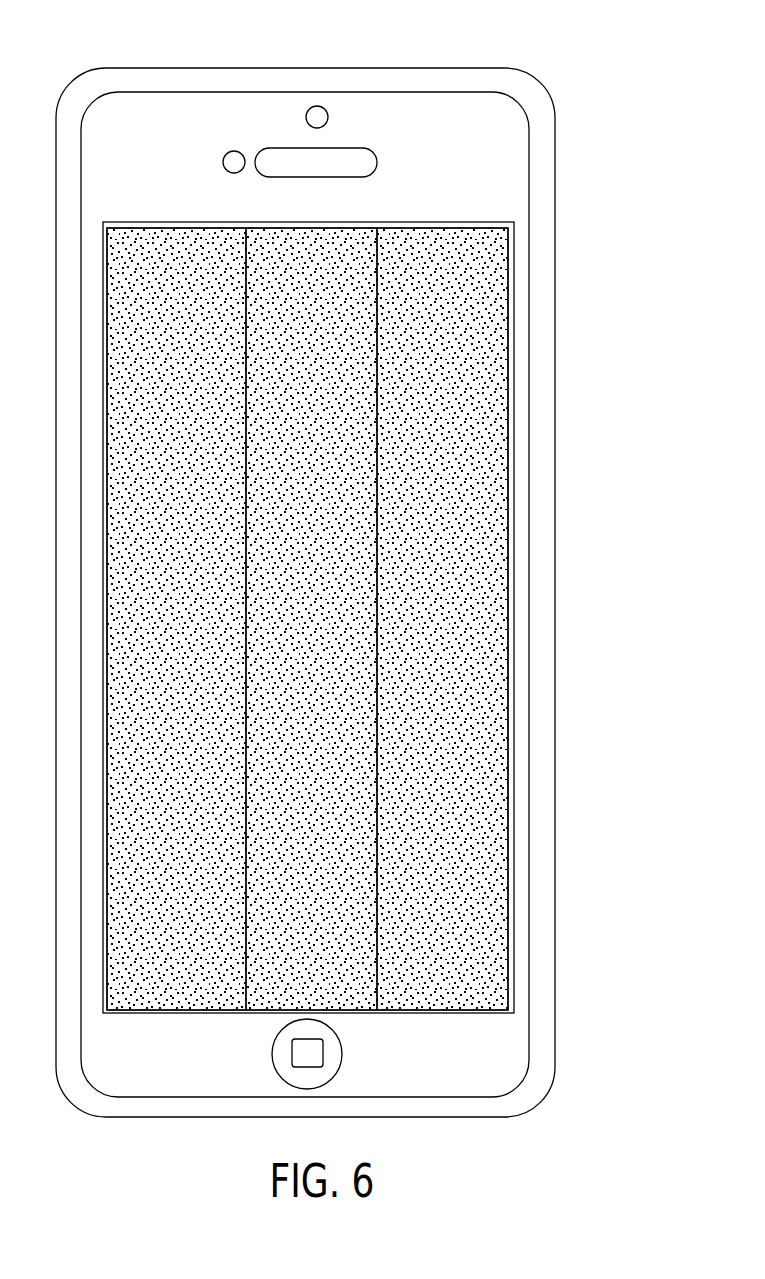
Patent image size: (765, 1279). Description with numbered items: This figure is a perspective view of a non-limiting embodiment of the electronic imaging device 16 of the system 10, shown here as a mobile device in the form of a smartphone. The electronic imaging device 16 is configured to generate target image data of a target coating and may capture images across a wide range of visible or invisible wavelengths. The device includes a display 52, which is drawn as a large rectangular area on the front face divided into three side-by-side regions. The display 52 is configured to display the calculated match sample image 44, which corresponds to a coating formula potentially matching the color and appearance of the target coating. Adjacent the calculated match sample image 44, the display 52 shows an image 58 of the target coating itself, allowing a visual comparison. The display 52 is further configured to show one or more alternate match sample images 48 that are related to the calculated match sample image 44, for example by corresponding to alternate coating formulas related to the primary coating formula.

The system 10 is at (628, 98).
The electronic imaging device 16 is at (580, 253).
The display 52 is at (497, 460).
The calculated match sample image 44 is at (157, 995).
The image of the target coating 58 is at (365, 1000).
The alternate match sample images 48 is at (503, 997).